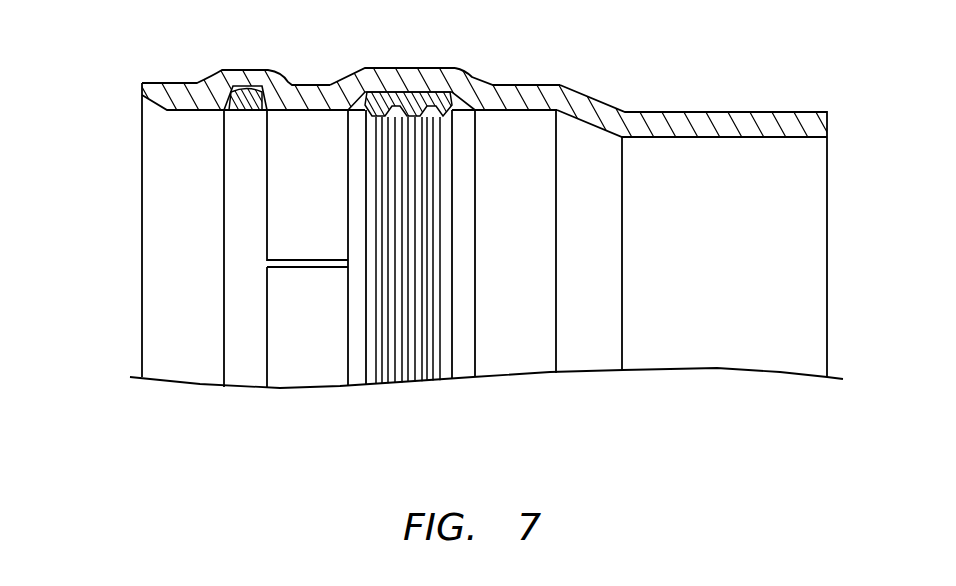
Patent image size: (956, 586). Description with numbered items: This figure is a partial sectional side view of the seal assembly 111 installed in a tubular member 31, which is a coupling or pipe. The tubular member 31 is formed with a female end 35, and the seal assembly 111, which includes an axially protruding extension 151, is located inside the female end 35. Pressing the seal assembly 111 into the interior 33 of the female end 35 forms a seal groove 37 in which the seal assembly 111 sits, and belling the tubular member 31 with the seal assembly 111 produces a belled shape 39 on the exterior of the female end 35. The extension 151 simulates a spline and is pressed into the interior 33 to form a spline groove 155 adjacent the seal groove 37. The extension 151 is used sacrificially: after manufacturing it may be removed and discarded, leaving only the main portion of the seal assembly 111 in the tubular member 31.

The tubular member 31 is at (758, 112).
The interior of the female end 33 is at (128, 198).
The female end 35 is at (163, 92).
The seal groove 37 is at (410, 97).
The belled shape 39 is at (373, 68).
The seal assembly 111 is at (463, 80).
The extension 151 is at (242, 180).
The spline groove 155 is at (257, 90).